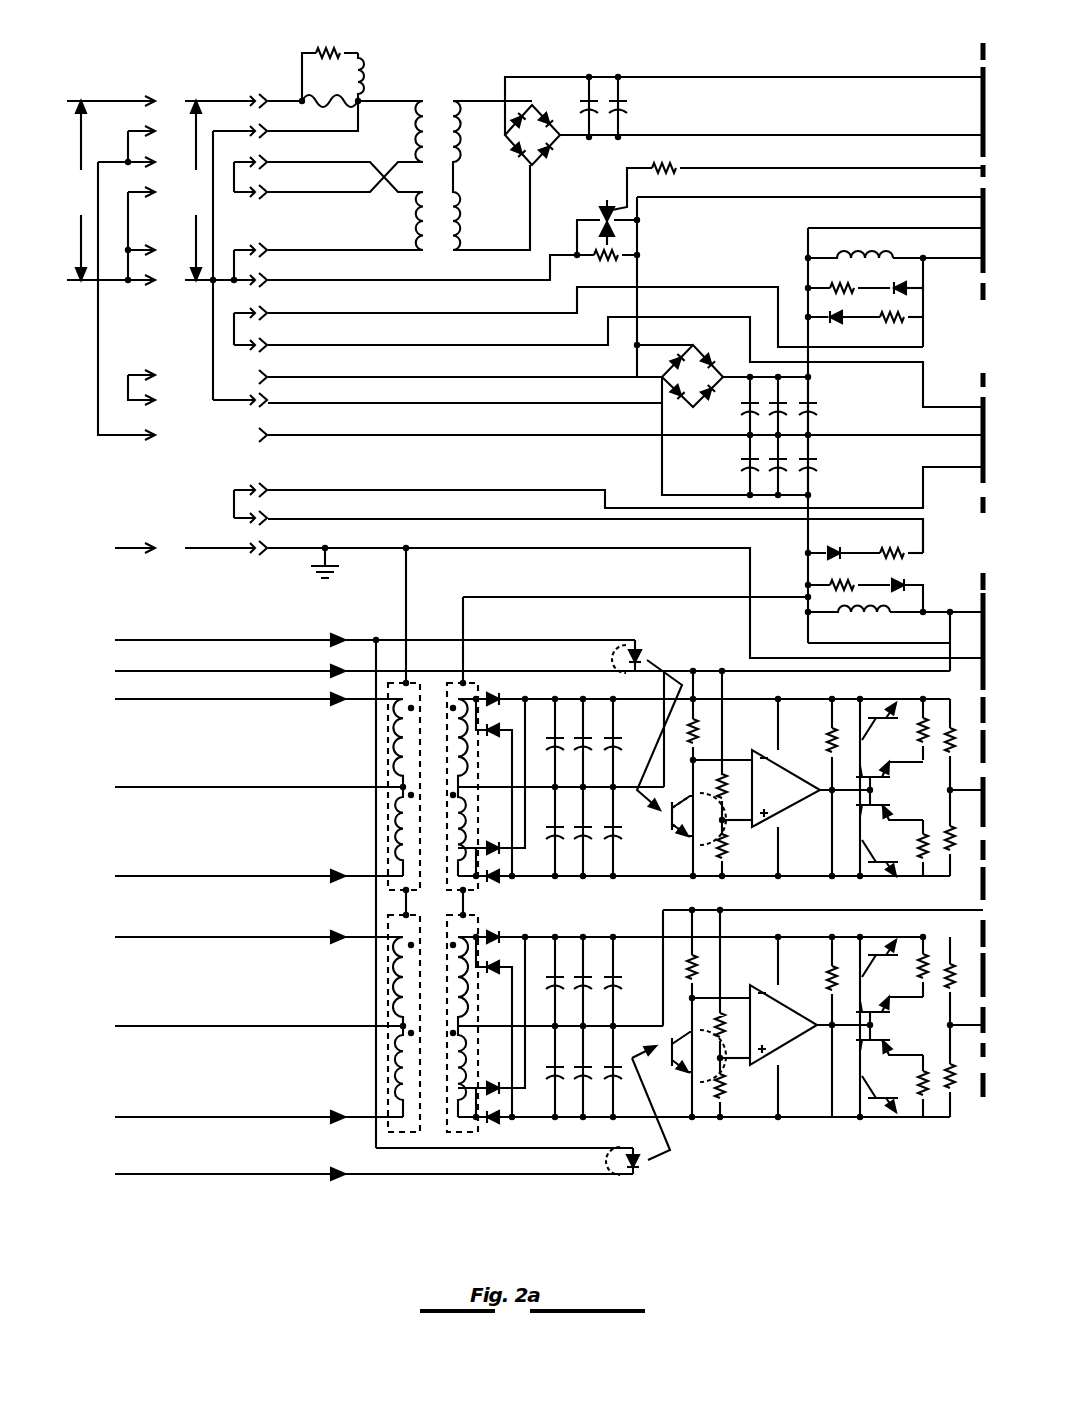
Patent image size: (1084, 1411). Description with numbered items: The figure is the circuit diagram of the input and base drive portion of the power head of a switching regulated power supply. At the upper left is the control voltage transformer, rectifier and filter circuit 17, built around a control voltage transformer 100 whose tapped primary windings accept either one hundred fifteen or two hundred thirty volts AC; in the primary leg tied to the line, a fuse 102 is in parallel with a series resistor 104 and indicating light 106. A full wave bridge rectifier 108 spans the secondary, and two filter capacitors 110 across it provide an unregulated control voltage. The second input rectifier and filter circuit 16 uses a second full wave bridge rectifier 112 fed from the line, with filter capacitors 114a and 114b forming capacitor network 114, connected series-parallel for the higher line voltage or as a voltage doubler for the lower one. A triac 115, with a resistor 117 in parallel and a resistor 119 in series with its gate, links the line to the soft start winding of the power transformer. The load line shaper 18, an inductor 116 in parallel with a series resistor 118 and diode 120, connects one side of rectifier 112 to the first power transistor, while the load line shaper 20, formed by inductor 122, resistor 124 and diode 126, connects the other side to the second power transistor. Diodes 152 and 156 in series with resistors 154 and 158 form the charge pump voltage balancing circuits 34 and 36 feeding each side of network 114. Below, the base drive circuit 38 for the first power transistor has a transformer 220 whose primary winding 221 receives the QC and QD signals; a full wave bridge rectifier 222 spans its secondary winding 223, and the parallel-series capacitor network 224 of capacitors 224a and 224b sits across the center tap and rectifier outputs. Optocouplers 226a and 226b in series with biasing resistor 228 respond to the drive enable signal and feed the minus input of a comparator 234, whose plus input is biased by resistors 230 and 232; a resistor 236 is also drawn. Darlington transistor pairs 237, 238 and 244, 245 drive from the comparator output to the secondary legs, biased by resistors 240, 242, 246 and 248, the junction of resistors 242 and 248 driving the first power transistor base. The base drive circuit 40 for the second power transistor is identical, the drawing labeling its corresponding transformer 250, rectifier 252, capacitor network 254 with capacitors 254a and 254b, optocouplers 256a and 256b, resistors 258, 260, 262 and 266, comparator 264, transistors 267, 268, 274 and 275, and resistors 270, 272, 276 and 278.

The control voltage transformer, rectifier and filter circuit 17 is at (258, 80).
The control voltage transformer 100 is at (443, 112).
The fuse 102 is at (350, 96).
The resistor 104 is at (349, 53).
The indicating light 106 is at (363, 96).
The full wave bridge rectifier 108 is at (506, 166).
The filter capacitors 110 is at (640, 108).
The second full wave bridge rectifier 112 is at (646, 385).
The capacitor network 114 is at (776, 436).
The filter capacitors 114a is at (840, 396).
The filter capacitors 114b is at (840, 482).
The triac 115 is at (596, 208).
The inductor 116 is at (877, 256).
The resistor 117 is at (596, 258).
The resistor 118 is at (863, 286).
The resistor 119 is at (680, 163).
The diode 120 is at (891, 286).
The inductor 122 is at (862, 622).
The resistor 124 is at (856, 578).
The diode 126 is at (884, 575).
The diode 152 is at (844, 329).
The resistor 154 is at (882, 320).
The diode 156 is at (857, 545).
The resistor 158 is at (884, 543).
The second input rectifier and filter circuit 16 is at (719, 421).
The load line shaper 18 is at (860, 435).
The load line shaper 20 is at (723, 617).
The charge pump voltage balancing circuit 34 is at (888, 316).
The charge pump voltage balancing circuit 36 is at (888, 540).
The Q1 base drive circuit 38 is at (549, 1071).
The Q2 base drive circuit 40 is at (549, 848).
The transformer 220 is at (419, 1062).
The primary winding 221 is at (395, 1010).
The full wave bridge rectifier 222 is at (495, 1138).
The secondary winding 223 is at (468, 1018).
The parallel-series capacitor network 224 is at (602, 1027).
The capacitor network 224a is at (602, 981).
The capacitor network 224b is at (600, 1071).
The optocoupler 226a is at (640, 1172).
The optocoupler 226b is at (688, 1064).
The biasing resistor 228 is at (702, 969).
The biasing resistor 230 is at (726, 1013).
The biasing resistor 232 is at (734, 1084).
The comparator 234 is at (800, 1035).
The resistor 236 is at (830, 988).
The Darlington circuit transistor 237 is at (874, 948).
The Darlington circuit transistor 238 is at (892, 1011).
The resistor 240 is at (920, 985).
The resistor 242 is at (956, 958).
The Darlington circuit transistor 244 is at (892, 1040).
The Darlington circuit transistor 245 is at (874, 1112).
The resistor 246 is at (916, 1092).
The resistor 248 is at (956, 1096).
The drive transformer 250 is at (429, 680).
The rectifier diodes 252 is at (500, 682).
The filter capacitors 254 is at (602, 787).
The upper filter capacitors 254a is at (602, 743).
The lower filter capacitors 254b is at (602, 831).
The optocoupler LED 256a is at (634, 647).
The optocoupler transistor 256b is at (676, 839).
The resistor 258 is at (702, 731).
The resistor 260 is at (726, 775).
The resistor 262 is at (734, 846).
The operational amplifier 264 is at (802, 799).
The resistor 266 is at (830, 750).
The transistor 267 is at (874, 710).
The transistor 268 is at (892, 775).
The resistor 270 is at (922, 736).
The resistor 272 is at (956, 720).
The transistor 274 is at (892, 804).
The transistor 275 is at (874, 874).
The resistor 276 is at (918, 855).
The resistor 278 is at (956, 860).